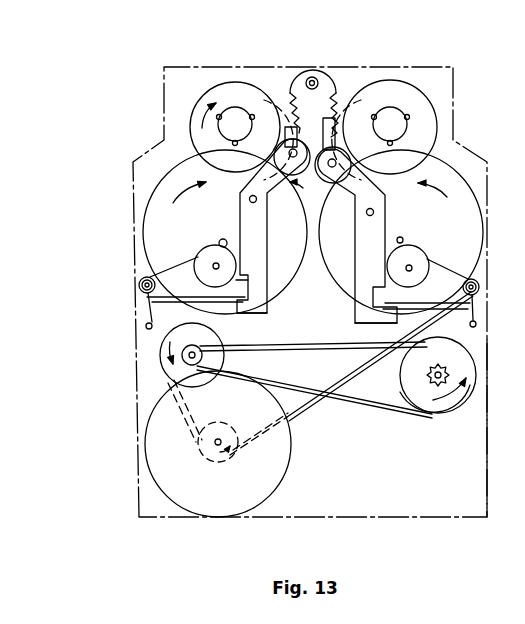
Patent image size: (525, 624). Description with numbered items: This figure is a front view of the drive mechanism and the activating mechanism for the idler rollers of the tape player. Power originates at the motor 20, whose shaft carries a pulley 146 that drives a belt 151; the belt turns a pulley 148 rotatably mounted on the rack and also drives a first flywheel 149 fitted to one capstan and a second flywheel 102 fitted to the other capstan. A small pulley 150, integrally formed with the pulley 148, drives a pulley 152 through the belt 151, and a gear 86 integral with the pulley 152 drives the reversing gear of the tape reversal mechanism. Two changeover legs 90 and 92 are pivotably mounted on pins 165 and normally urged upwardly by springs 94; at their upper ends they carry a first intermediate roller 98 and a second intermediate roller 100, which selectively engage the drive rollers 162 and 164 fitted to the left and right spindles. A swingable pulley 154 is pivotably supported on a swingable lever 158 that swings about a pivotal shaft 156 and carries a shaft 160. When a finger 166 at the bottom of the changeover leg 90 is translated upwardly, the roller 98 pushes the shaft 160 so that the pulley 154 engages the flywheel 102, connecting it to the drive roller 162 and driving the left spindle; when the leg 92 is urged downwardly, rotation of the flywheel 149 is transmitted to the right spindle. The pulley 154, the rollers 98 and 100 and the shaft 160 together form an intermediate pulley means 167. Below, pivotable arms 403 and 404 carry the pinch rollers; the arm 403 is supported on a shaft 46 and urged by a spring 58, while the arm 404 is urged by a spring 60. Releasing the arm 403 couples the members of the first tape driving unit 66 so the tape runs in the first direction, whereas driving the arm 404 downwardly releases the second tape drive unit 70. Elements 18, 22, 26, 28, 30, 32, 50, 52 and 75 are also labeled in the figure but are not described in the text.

The housing 18 is at (140, 406).
The motor 20 is at (217, 500).
The printing apparatus 22 is at (369, 487).
The pin 26 is at (221, 239).
The pin 28 is at (400, 237).
The left ribbon spool 30 is at (226, 134).
The right ribbon spool 32 is at (381, 134).
The shaft 46 is at (494, 293).
The roller pivot 50 is at (197, 261).
The roller 52 is at (420, 262).
The spring 58 is at (145, 310).
The spring 60 is at (476, 300).
The first tape driving unit 66 is at (222, 250).
The second tape drive unit 70 is at (409, 243).
The housing side wall 75 is at (505, 428).
The gear 86 is at (446, 368).
The changeover leg 90 is at (262, 270).
The changeover leg 92 is at (361, 267).
The spring 94 is at (331, 118).
The first intermediate roller 98 is at (277, 148).
The second intermediate roller 100 is at (355, 151).
The second flywheel 102 is at (476, 229).
The pulley 146 is at (200, 447).
The pulley 148 is at (158, 360).
The first flywheel 149 is at (153, 192).
The small pulley 150 is at (210, 355).
The belt 151 is at (303, 405).
The pulley 152 is at (452, 410).
The swingable pulley 154 is at (280, 110).
The pivotal shaft 156 is at (297, 80).
The swingable lever 158 is at (297, 80).
The shaft 160 is at (282, 108).
The drive roller 162 is at (190, 116).
The drive roller 164 is at (437, 121).
The pin 165 is at (249, 200).
The finger 166 is at (255, 320).
The intermediate pulley means 167 is at (341, 116).
The pivotable arm 403 is at (165, 270).
The pivotable arm 404 is at (457, 277).